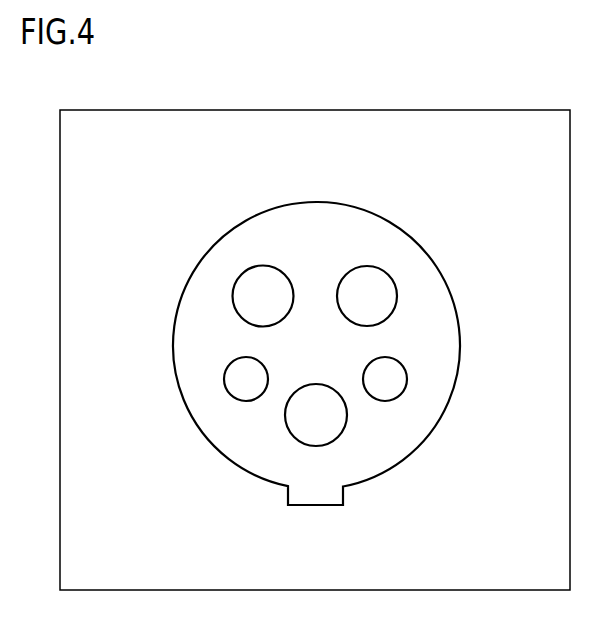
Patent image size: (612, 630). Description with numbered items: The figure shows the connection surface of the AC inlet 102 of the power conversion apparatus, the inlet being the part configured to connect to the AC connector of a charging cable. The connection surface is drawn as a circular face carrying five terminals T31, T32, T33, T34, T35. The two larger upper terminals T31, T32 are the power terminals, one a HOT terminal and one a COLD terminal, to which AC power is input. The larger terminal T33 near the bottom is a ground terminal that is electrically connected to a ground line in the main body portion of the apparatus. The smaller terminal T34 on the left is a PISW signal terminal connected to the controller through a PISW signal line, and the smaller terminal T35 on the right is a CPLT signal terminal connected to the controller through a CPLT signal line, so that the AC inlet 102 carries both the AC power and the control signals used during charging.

The AC inlet 102 is at (498, 88).
The terminal T31 is at (257, 287).
The terminal T32 is at (371, 287).
The terminal T33 is at (326, 418).
The terminal T34 is at (242, 383).
The terminal T35 is at (392, 378).